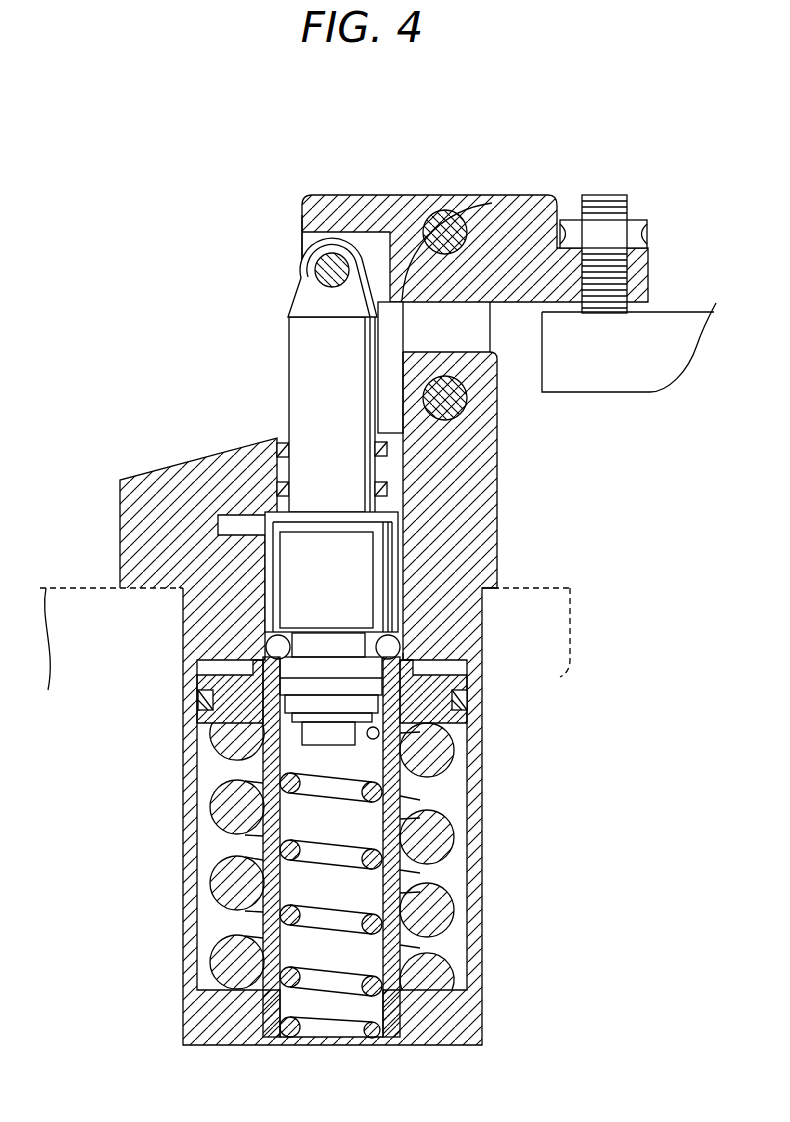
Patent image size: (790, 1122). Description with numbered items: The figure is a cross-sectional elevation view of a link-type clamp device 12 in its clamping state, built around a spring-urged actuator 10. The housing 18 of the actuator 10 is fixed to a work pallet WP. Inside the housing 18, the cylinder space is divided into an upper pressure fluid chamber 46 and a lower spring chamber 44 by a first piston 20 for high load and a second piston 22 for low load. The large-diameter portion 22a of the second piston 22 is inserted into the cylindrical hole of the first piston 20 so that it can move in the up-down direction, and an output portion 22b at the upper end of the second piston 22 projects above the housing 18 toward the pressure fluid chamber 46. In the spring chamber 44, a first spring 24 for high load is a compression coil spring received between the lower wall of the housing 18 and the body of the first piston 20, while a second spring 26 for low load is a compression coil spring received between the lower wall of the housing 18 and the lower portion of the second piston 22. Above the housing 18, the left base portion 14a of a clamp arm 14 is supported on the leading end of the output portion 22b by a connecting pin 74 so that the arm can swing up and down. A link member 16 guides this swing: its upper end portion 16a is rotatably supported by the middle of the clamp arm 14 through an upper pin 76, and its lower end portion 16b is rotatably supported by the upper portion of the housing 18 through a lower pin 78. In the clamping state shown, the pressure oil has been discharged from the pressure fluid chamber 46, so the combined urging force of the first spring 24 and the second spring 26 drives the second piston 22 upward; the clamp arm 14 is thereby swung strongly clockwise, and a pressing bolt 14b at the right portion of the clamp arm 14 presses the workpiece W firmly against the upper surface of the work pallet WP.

The actuator 10 is at (180, 398).
The clamp device 12 is at (100, 133).
The clamp arm 14 is at (348, 196).
The left portion (base portion) of the clamp arm 14a is at (300, 222).
The pressing bolt 14b is at (600, 200).
The link member 16 is at (490, 327).
The upper end portion of the link member 16a is at (482, 212).
The lower end portion of the link member 16b is at (407, 418).
The housing 18 is at (163, 482).
The first piston 20 is at (480, 719).
The second piston 22 is at (398, 558).
The large-diameter portion of the second piston 22a is at (360, 598).
The output portion 22b is at (297, 352).
The first spring 24 is at (401, 848).
The second spring 26 is at (382, 912).
The spring chamber 44 is at (225, 773).
The pressure fluid chamber 46 is at (272, 592).
The connecting pin 74 is at (322, 272).
The upper pin 76 is at (432, 215).
The lower pin 78 is at (467, 398).
The workpiece W is at (690, 310).
The work pallet WP is at (72, 588).